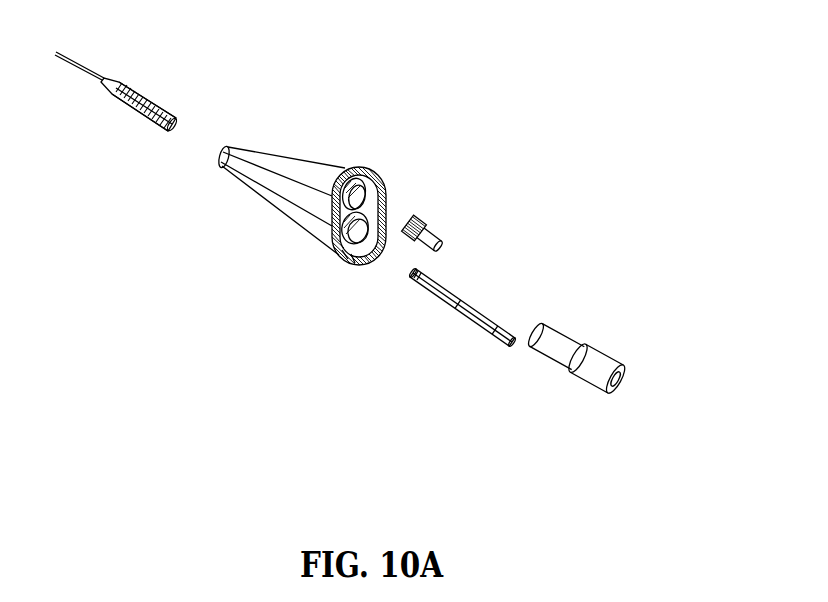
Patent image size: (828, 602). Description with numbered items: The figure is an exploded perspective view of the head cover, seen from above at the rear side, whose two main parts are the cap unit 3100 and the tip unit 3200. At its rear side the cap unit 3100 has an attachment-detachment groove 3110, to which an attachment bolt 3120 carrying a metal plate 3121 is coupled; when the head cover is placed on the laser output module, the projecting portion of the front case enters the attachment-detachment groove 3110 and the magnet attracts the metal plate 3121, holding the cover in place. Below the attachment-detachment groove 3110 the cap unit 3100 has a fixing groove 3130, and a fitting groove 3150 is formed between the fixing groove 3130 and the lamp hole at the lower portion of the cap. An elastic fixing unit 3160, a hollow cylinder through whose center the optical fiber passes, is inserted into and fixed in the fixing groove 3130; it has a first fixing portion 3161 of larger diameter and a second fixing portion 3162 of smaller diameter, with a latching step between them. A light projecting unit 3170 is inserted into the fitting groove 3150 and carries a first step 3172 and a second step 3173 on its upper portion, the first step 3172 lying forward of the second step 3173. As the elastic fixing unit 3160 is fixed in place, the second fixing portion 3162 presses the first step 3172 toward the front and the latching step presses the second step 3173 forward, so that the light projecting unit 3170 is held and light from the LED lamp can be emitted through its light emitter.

The tip unit 3200 is at (170, 30).
The cap unit 3100 is at (296, 152).
The attachment-detachment groove 3110 is at (380, 187).
The fixing groove 3130 is at (402, 200).
The fitting groove 3150 is at (371, 252).
The attachment bolt 3120 is at (422, 216).
The metal plate 3121 is at (443, 243).
The light projecting unit 3170 is at (496, 340).
The first step 3172 is at (423, 272).
The second step 3173 is at (495, 323).
The elastic fixing unit 3160 is at (558, 508).
The second fixing portion 3162 is at (550, 365).
The first fixing portion 3161 is at (588, 387).